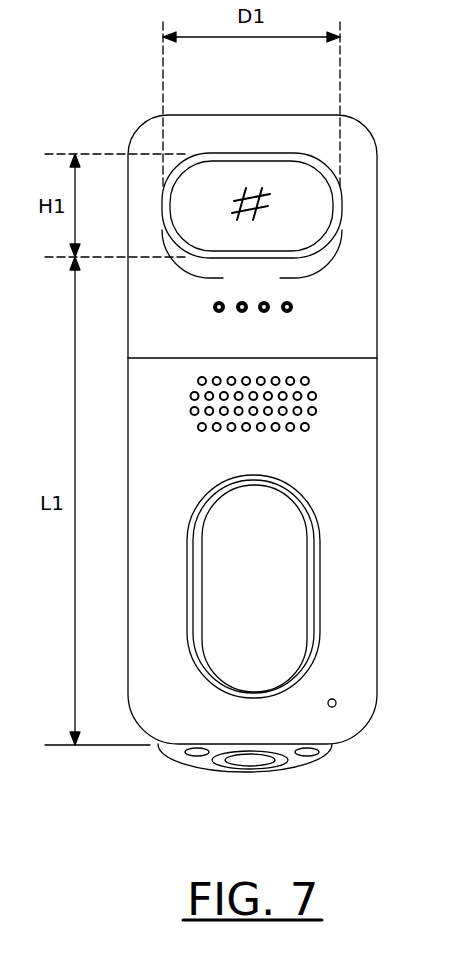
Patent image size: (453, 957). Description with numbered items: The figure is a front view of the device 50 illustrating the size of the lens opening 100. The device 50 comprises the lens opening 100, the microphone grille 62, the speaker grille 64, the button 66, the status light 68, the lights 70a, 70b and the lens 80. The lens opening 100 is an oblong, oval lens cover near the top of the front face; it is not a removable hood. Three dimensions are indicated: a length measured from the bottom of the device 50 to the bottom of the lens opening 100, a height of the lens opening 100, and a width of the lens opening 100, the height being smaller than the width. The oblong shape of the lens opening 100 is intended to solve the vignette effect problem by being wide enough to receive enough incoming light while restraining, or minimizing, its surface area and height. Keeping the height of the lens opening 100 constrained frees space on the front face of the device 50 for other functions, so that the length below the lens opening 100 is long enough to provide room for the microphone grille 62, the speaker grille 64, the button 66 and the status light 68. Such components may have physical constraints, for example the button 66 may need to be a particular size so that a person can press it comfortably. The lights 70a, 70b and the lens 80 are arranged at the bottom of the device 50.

The device 50 is at (358, 127).
The lens opening 100 is at (257, 153).
The microphone grille 62 is at (291, 307).
The speaker grille 64 is at (316, 412).
The button 66 is at (307, 578).
The status light 68 is at (337, 706).
The light 70a is at (190, 755).
The light 70b is at (312, 755).
The lens 80 is at (255, 762).